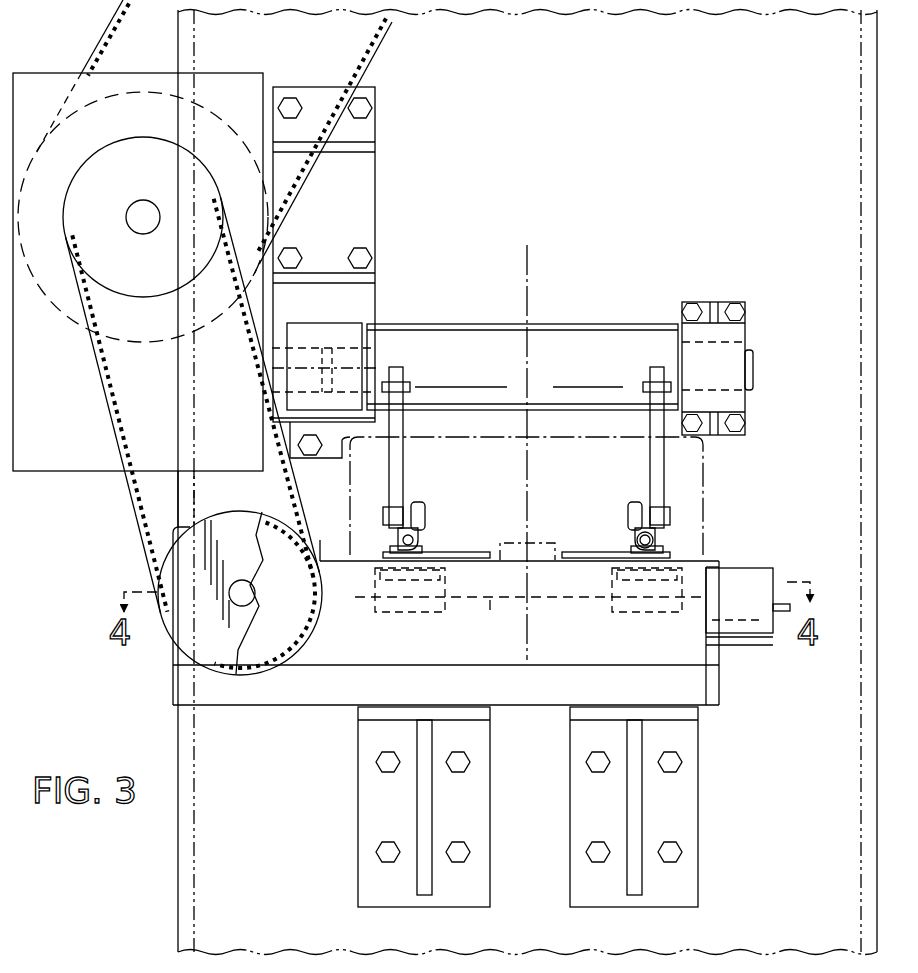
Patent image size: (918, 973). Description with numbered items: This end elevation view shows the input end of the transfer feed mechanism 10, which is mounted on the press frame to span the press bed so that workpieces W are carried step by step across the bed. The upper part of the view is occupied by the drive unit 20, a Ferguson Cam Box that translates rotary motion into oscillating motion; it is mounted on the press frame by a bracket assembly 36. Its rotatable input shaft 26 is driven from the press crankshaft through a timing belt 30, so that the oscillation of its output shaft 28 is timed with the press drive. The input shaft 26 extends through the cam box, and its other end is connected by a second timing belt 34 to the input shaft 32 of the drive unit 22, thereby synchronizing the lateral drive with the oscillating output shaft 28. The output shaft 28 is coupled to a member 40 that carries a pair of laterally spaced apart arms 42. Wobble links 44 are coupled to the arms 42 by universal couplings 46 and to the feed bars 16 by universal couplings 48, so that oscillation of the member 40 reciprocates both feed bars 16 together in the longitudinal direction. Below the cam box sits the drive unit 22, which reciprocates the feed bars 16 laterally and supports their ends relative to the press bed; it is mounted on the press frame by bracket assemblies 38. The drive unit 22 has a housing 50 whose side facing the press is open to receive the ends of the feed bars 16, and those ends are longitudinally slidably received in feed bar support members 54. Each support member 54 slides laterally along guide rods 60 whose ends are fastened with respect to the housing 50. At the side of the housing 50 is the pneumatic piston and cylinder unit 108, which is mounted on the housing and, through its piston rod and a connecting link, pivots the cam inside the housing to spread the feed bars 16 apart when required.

The transfer feed mechanism 10 is at (703, 113).
The feed bars 16 is at (427, 553).
The drive unit 20 is at (234, 73).
The drive unit 22 is at (723, 688).
The input shaft 26 is at (153, 213).
The output shaft 28 is at (280, 352).
The timing belt 30 is at (389, 38).
The input shaft 32 is at (240, 603).
The timing belt 34 is at (130, 507).
The bracket assembly 36 is at (379, 190).
The bracket assemblies 38 is at (565, 878).
The member 40 is at (562, 328).
The arms 42 is at (404, 466).
The wobble links 44 is at (393, 546).
The universal couplings 46 is at (411, 500).
The universal couplings 48 is at (655, 543).
The housing 50 is at (315, 700).
The feed bar support members 54 is at (412, 618).
The guide rods 60 is at (494, 612).
The pneumatic piston and cylinder unit 108 is at (756, 570).
The workpieces W is at (548, 543).